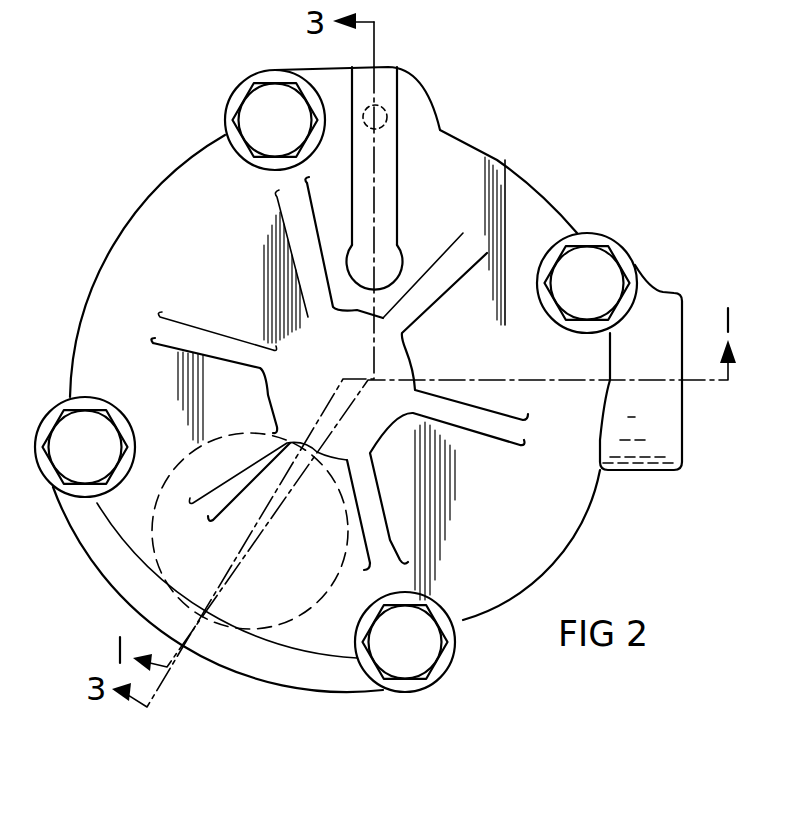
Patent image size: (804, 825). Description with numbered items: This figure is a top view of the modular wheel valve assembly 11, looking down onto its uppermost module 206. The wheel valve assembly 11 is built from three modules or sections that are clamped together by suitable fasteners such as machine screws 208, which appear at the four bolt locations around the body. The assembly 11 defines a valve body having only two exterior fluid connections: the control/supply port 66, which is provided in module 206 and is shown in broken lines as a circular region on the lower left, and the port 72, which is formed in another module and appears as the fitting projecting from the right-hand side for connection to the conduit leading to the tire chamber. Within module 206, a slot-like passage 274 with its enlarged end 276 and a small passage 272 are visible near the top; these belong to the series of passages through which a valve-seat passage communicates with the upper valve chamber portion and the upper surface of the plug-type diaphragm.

The wheel valve assembly 11 is at (525, 143).
The port 66 is at (160, 570).
The port 72 is at (662, 318).
The module 206 is at (172, 201).
The machine screws 208 is at (257, 108).
The passage 272 is at (380, 112).
The passage 274 is at (383, 185).
The passage 276 is at (390, 267).